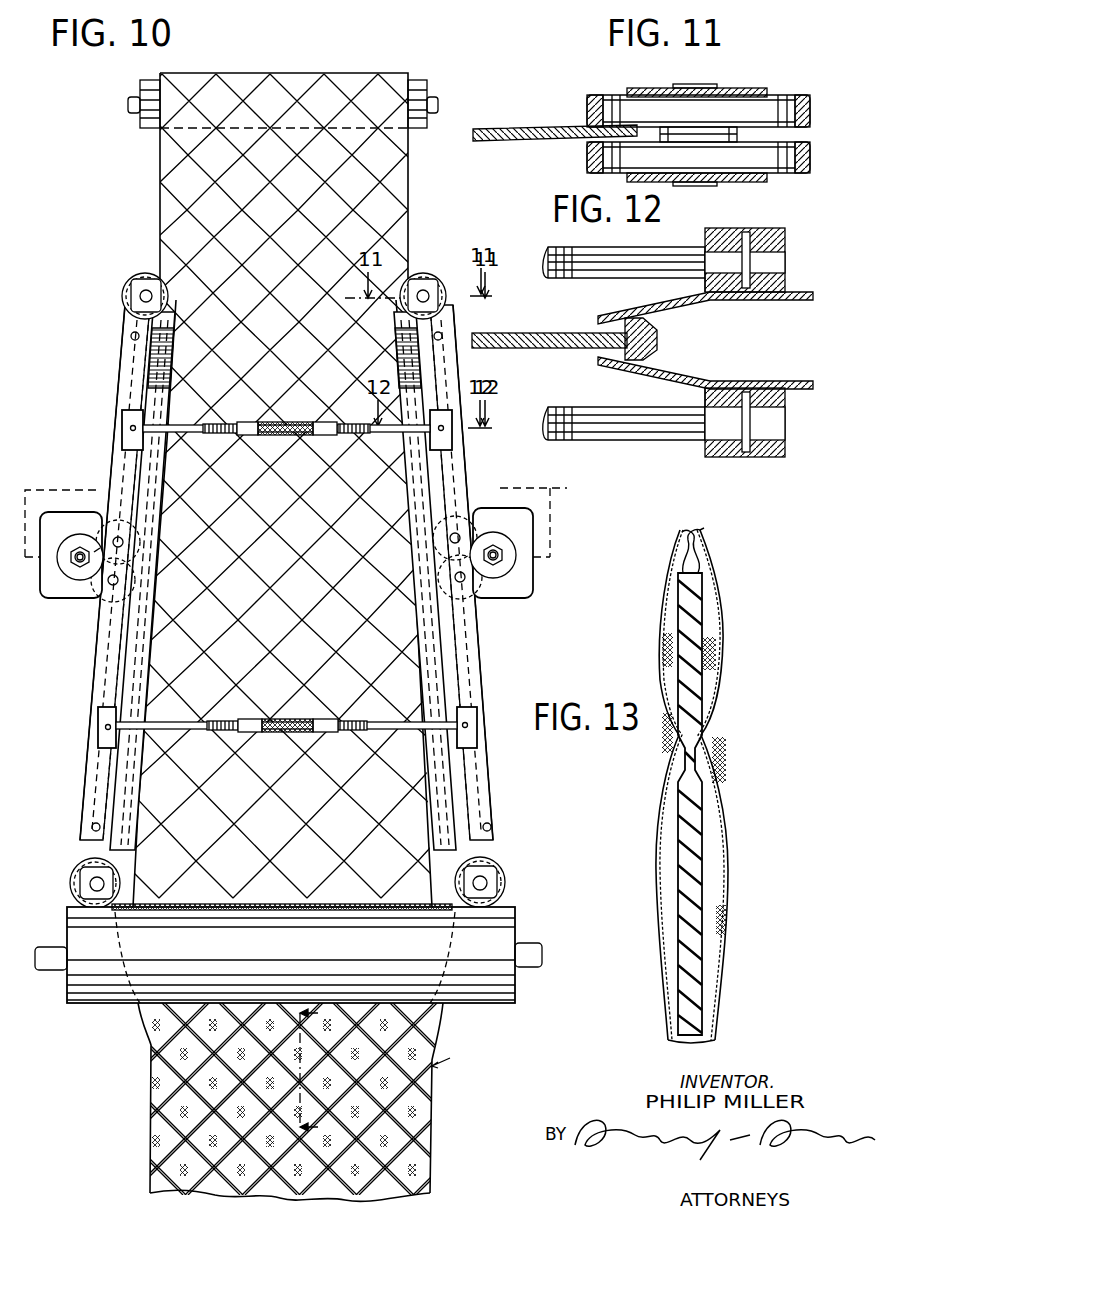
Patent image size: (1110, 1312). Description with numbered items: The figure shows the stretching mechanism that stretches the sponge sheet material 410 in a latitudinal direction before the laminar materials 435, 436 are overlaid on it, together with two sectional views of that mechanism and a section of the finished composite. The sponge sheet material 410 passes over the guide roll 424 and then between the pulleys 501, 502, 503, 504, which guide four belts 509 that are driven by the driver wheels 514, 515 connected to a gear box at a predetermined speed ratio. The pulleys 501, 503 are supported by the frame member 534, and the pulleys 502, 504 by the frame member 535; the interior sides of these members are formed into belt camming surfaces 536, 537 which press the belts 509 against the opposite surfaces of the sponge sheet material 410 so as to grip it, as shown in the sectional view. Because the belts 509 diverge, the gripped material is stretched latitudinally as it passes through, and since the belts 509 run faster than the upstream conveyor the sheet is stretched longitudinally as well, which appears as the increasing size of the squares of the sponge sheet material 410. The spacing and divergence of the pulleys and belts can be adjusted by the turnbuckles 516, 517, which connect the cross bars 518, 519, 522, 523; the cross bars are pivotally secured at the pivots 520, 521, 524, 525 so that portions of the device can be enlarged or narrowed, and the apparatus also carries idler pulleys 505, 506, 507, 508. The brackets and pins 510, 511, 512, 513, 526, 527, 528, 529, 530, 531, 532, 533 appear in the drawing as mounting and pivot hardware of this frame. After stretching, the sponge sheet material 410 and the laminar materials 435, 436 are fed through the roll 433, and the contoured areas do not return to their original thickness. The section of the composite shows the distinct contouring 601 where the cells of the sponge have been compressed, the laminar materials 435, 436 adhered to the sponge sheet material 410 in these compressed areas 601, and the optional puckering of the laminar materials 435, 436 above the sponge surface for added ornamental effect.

In FIG. 10, the sponge sheet material 410 is at (182, 196).
In FIG. 11, the sponge sheet material 410 is at (523, 128).
In FIG. 12, the sponge sheet material 410 is at (556, 340).
In FIG. 13, the sponge sheet material 410 is at (686, 618).
In FIG. 10, the guide roll 424 is at (414, 85).
In FIG. 10, the roll 433 is at (510, 930).
In FIG. 10, the laminar material 435 is at (218, 905).
In FIG. 13, the laminar material 435 is at (658, 850).
In FIG. 10, the laminar material 436 is at (395, 1110).
In FIG. 13, the laminar material 436 is at (720, 850).
In FIG. 10, the pulley 501 is at (138, 278).
In FIG. 10, the pulley 502 is at (450, 258).
In FIG. 11, the pulley 502 is at (790, 96).
In FIG. 10, the pulley 503 is at (78, 876).
In FIG. 10, the pulley 504 is at (498, 876).
In FIG. 10, the idler pulley 505 is at (92, 824).
In FIG. 10, the idler pulley 506 is at (492, 826).
In FIG. 10, the idler pulley 507 is at (128, 330).
In FIG. 10, the idler pulley 508 is at (438, 334).
In FIG. 10, the belt 509 is at (102, 760).
In FIG. 11, the belt 509 is at (596, 105).
In FIG. 12, the belt 509 is at (650, 340).
In FIG. 10, the left drive bracket 510 is at (95, 605).
In FIG. 10, the drive roller 511 is at (105, 522).
In FIG. 10, the drive roller 512 is at (460, 512).
In FIG. 10, the right drive bracket 513 is at (478, 604).
In FIG. 10, the driver wheel 514 is at (510, 556).
In FIG. 10, the driver wheel 515 is at (74, 540).
In FIG. 10, the turnbuckle 516 is at (278, 440).
In FIG. 10, the turnbuckle 517 is at (305, 712).
In FIG. 10, the cross bar 518 is at (170, 728).
In FIG. 10, the cross bar 519 is at (378, 730).
In FIG. 10, the pivot 520 is at (228, 718).
In FIG. 10, the pivot 521 is at (376, 718).
In FIG. 10, the cross bar 522 is at (215, 440).
In FIG. 10, the cross bar 523 is at (350, 438).
In FIG. 12, the cross bar 523 is at (630, 256).
In FIG. 10, the pivot 524 is at (190, 425).
In FIG. 10, the pivot 525 is at (355, 420).
In FIG. 12, the pivot 525 is at (574, 248).
In FIG. 10, the pivot hole 526 is at (466, 720).
In FIG. 10, the lower left bracket 527 is at (104, 717).
In FIG. 10, the upper left bracket 528 is at (125, 414).
In FIG. 10, the block bore 529 is at (440, 440).
In FIG. 12, the block bore 529 is at (706, 284).
In FIG. 10, the lower right bracket 530 is at (472, 717).
In FIG. 10, the lower tie rod 531 is at (105, 727).
In FIG. 10, the upper tie rod 532 is at (130, 429).
In FIG. 10, the upper right block 533 is at (446, 428).
In FIG. 12, the upper right block 533 is at (742, 235).
In FIG. 10, the frame member 534 is at (490, 792).
In FIG. 11, the frame member 534 is at (642, 89).
In FIG. 12, the frame member 534 is at (790, 302).
In FIG. 10, the frame member 535 is at (95, 780).
In FIG. 10, the belt camming surface 536 is at (428, 556).
In FIG. 12, the belt camming surface 536 is at (640, 310).
In FIG. 10, the belt camming surface 537 is at (150, 824).
In FIG. 13, the contouring 601 is at (706, 762).